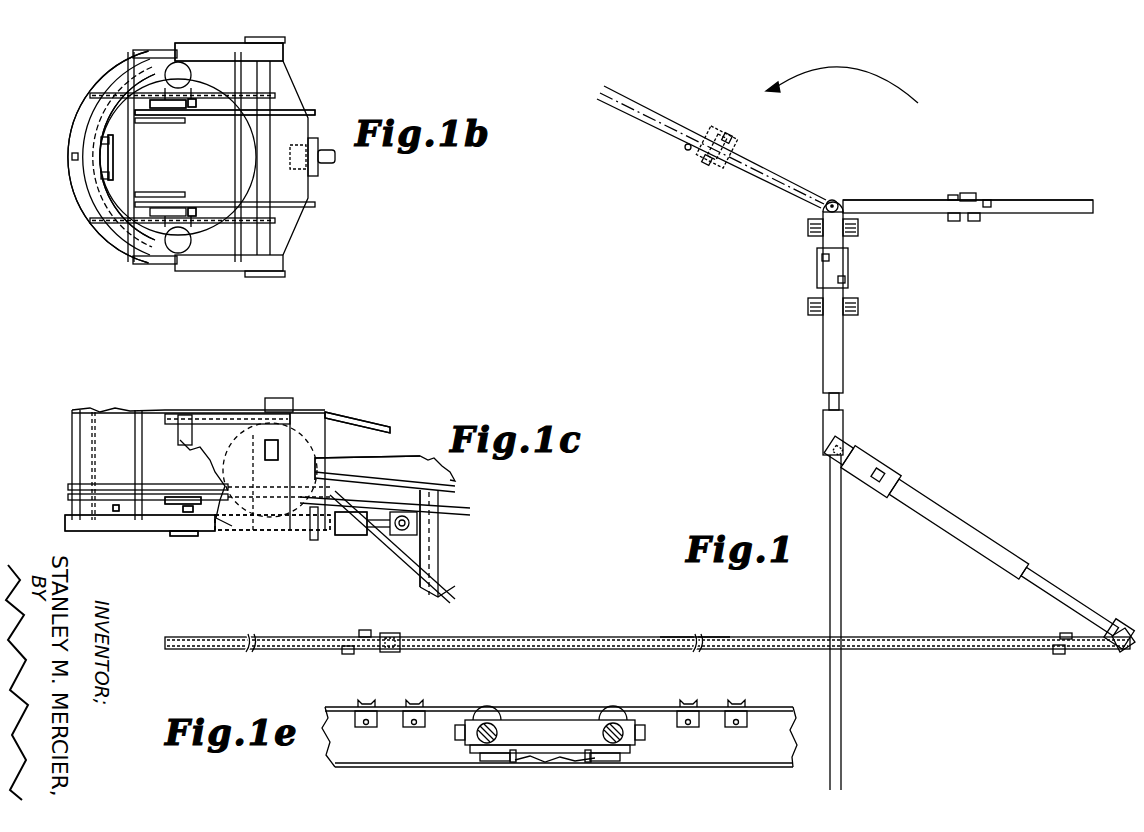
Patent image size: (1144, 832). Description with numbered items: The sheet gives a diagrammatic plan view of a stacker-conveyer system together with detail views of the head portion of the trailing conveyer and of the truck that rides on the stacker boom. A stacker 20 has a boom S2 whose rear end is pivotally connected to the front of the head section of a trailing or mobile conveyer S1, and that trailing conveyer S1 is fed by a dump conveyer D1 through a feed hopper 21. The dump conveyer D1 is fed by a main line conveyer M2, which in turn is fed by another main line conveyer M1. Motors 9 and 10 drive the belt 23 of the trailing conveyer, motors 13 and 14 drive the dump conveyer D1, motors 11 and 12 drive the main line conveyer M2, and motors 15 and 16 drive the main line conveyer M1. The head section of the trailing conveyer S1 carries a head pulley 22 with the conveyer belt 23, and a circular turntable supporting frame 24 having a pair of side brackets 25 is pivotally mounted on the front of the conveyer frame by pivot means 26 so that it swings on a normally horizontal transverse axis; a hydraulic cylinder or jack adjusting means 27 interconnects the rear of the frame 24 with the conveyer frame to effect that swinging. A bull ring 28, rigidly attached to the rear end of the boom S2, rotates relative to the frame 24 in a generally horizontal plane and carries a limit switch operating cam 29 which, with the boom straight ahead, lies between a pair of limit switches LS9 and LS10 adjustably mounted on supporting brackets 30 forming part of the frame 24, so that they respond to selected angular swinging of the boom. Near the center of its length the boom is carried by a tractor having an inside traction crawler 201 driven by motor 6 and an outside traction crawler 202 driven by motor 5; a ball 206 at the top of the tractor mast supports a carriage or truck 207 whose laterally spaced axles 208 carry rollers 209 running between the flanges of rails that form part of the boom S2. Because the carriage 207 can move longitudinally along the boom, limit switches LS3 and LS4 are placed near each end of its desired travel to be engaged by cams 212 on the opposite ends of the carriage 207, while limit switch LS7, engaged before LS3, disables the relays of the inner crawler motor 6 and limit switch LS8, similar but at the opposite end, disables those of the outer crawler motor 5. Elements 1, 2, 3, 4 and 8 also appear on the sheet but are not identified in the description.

In FIG. 1, the lower left clamp 1 is at (806, 306).
In FIG. 1, the lower right clamp 2 is at (860, 306).
In FIG. 1, the upper left clamp 3 is at (806, 228).
In FIG. 1, the upper right clamp 4 is at (860, 228).
In FIG. 1, the motor 5 is at (967, 192).
In FIG. 1, the motor 6 is at (958, 222).
In FIG. 1, the arm stop 8 is at (990, 200).
In FIG. 1, the motor 9 is at (846, 281).
In FIG. 1, the motor 10 is at (822, 259).
In FIG. 1, the motor 11 is at (1058, 654).
In FIG. 1, the motor 12 is at (1062, 634).
In FIG. 1, the motor 13 is at (868, 466).
In FIG. 1, the motor 14 is at (851, 474).
In FIG. 1, the motor 15 is at (347, 654).
In FIG. 1, the motor 16 is at (364, 630).
In FIG. 1, the stacker 20 is at (930, 200).
In FIG. 1, the feed hopper 21 is at (840, 432).
In FIG. 1C, the head pulley 22 is at (326, 414).
In FIG. 1C, the conveyer belt 23 is at (370, 425).
In FIG. 1, the conveyer belt 23 is at (840, 400).
In FIG. 1B, the circular turntable supporting frame 24 is at (108, 232).
In FIG. 1C, the circular turntable supporting frame 24 is at (68, 532).
In FIG. 1, the circular turntable supporting frame 24 is at (834, 198).
In FIG. 1B, the side brackets 25 is at (190, 52).
In FIG. 1C, the side brackets 25 is at (218, 488).
In FIG. 1C, the pivot means 26 is at (273, 448).
In FIG. 1B, the hydraulic cylinder or jack adjusting means 27 is at (330, 164).
In FIG. 1C, the hydraulic cylinder or jack adjusting means 27 is at (355, 535).
In FIG. 1B, the bull ring 28 is at (110, 197).
In FIG. 1C, the bull ring 28 is at (160, 522).
In FIG. 1B, the limit switch operating cam 29 is at (106, 160).
In FIG. 1C, the limit switch operating cam 29 is at (115, 505).
In FIG. 1B, the supporting brackets 30 is at (170, 104).
In FIG. 1C, the supporting brackets 30 is at (172, 497).
In FIG. 1, the inside traction crawler 201 is at (953, 222).
In FIG. 1, the outside traction crawler 202 is at (982, 222).
In FIG. 1E, the ball 206 is at (560, 758).
In FIG. 1E, the carriage or truck 207 is at (565, 744).
In FIG. 1E, the axles 208 is at (470, 750).
In FIG. 1E, the roller 209 is at (610, 720).
In FIG. 1E, the cams 212 is at (460, 733).
In FIG. 1B, the trailing conveyer S1 is at (330, 114).
In FIG. 1C, the trailing conveyer S1 is at (460, 537).
In FIG. 1, the trailing conveyer S1 is at (846, 356).
In FIG. 1, the stacker boom S2 is at (1056, 192).
In FIG. 1, the dump conveyer D1 is at (1010, 556).
In FIG. 1, the main line conveyer M1 is at (240, 638).
In FIG. 1, the main line conveyer M2 is at (715, 632).
In FIG. 1E, the limit switch LS3 is at (355, 718).
In FIG. 1E, the limit switch LS4 is at (733, 718).
In FIG. 1E, the limit switch LS7 is at (412, 718).
In FIG. 1E, the limit switch LS8 is at (680, 718).
In FIG. 1B, the limit switch LS9 is at (195, 105).
In FIG. 1B, the limit switch LS10 is at (195, 210).
In FIG. 1C, the limit switch LS10 is at (193, 512).